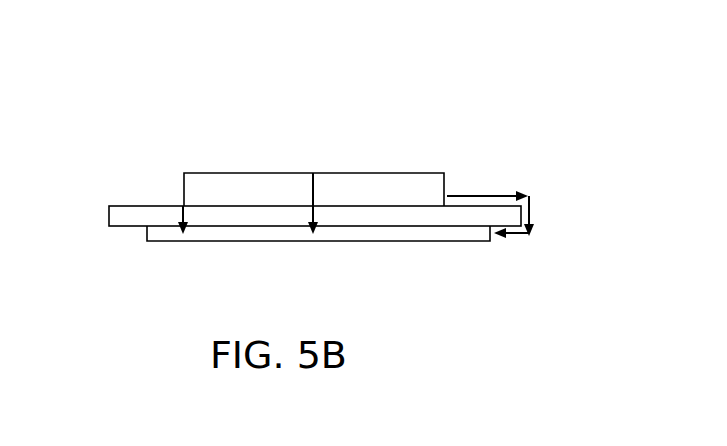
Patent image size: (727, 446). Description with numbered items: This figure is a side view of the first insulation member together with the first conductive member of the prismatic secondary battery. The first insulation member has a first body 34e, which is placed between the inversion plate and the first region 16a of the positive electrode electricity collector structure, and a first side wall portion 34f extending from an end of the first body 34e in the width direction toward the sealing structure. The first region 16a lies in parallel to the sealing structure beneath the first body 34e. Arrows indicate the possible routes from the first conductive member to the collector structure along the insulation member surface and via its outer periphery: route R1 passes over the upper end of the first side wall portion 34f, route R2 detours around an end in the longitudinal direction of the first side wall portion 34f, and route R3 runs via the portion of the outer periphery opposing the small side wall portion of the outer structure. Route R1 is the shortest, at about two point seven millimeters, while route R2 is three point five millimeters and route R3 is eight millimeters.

The first body 34e is at (423, 220).
The first side wall portion 34f is at (362, 182).
The first region 16a is at (233, 235).
The route R1 is at (313, 192).
The route R2 is at (181, 210).
The route R3 is at (488, 197).